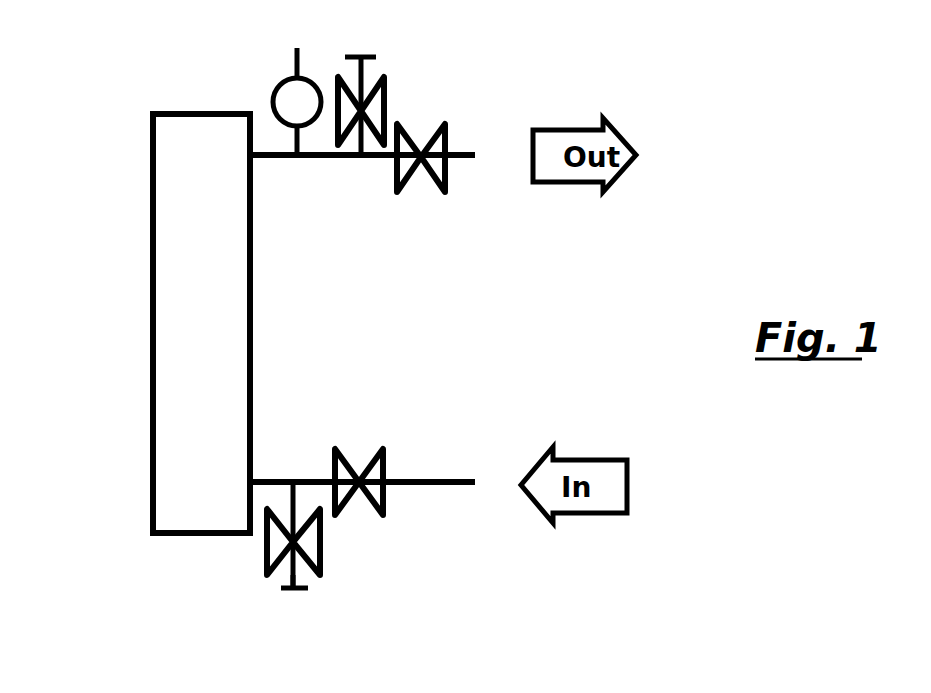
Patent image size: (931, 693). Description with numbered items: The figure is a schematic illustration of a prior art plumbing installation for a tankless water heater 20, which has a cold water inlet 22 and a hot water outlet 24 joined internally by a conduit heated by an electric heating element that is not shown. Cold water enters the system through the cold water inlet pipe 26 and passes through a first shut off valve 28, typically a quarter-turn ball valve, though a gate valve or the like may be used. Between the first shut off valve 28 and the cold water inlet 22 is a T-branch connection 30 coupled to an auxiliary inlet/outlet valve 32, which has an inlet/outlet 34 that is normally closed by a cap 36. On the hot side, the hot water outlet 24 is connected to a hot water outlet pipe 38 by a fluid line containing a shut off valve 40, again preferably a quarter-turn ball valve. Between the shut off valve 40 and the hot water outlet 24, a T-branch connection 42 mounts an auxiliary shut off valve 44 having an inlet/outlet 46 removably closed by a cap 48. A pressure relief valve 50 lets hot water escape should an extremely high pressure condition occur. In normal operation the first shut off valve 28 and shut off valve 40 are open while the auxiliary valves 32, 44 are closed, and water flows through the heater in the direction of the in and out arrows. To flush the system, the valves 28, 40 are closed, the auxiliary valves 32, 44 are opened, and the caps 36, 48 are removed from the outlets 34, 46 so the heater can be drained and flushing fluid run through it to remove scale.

The tankless water heater 20 is at (150, 298).
The cold water inlet 22 is at (278, 470).
The hot water outlet 24 is at (258, 160).
The cold water inlet pipe 26 is at (447, 487).
The first shut off valve 28 is at (385, 452).
The T-branch connection 30 is at (300, 495).
The auxiliary inlet/outlet valve 32 is at (265, 545).
The inlet/outlet 34 is at (288, 575).
The cap 36 is at (305, 596).
The hot water outlet pipe 38 is at (472, 160).
The shut off valve 40 is at (447, 128).
The T-branch connection 42 is at (343, 162).
The auxiliary shut off valve 44 is at (385, 108).
The inlet/outlet 46 is at (368, 76).
The cap 48 is at (352, 54).
The pressure relief valve 50 is at (283, 80).